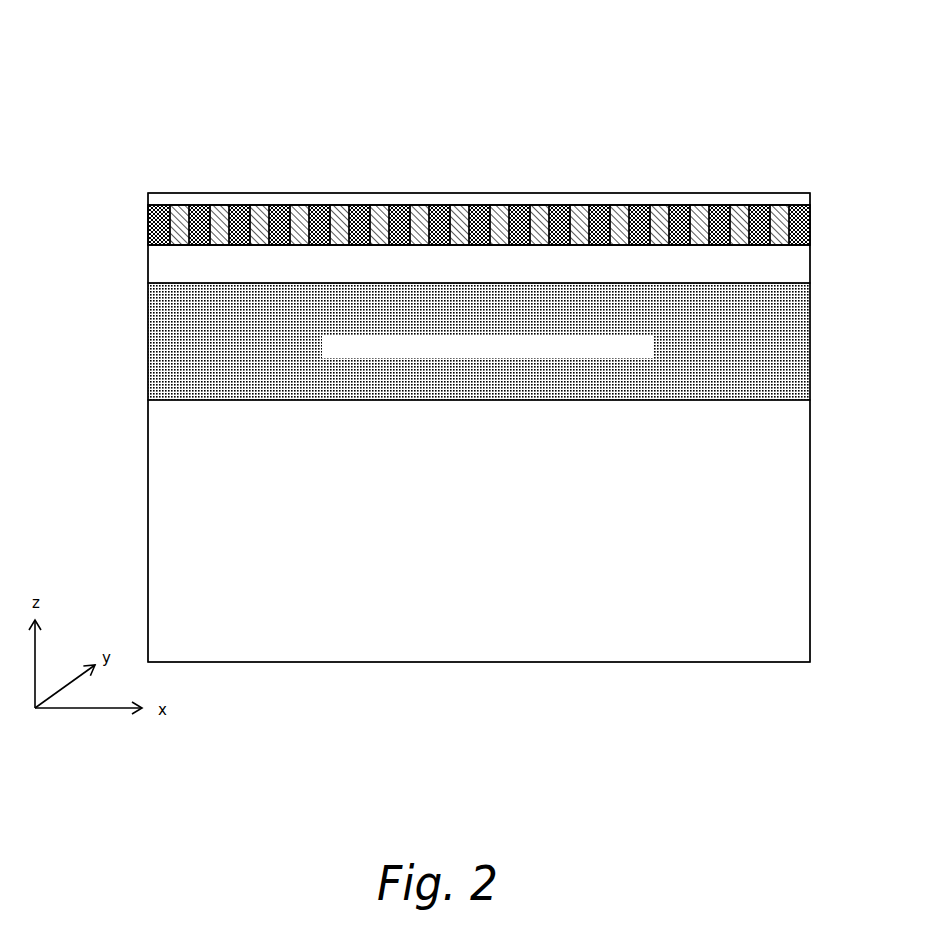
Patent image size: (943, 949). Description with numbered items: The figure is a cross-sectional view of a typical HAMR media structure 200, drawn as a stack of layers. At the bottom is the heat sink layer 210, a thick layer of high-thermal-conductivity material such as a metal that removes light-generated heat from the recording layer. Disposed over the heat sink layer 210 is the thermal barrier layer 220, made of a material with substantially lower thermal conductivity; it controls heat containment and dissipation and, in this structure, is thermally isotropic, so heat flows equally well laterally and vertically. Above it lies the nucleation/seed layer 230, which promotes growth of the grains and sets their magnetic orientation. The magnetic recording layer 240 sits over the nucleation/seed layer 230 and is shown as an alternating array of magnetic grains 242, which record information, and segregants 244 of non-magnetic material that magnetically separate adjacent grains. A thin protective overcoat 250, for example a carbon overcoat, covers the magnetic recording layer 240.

The HAMR media structure 200 is at (156, 105).
The heat sink layer 210 is at (136, 532).
The thermal barrier layer 220 is at (137, 351).
The nucleation/seed layer 230 is at (137, 264).
The magnetic recording layer 240 is at (431, 167).
The magnetic grains 242 is at (397, 204).
The segregants 244 is at (373, 204).
The protective overcoat 250 is at (137, 195).